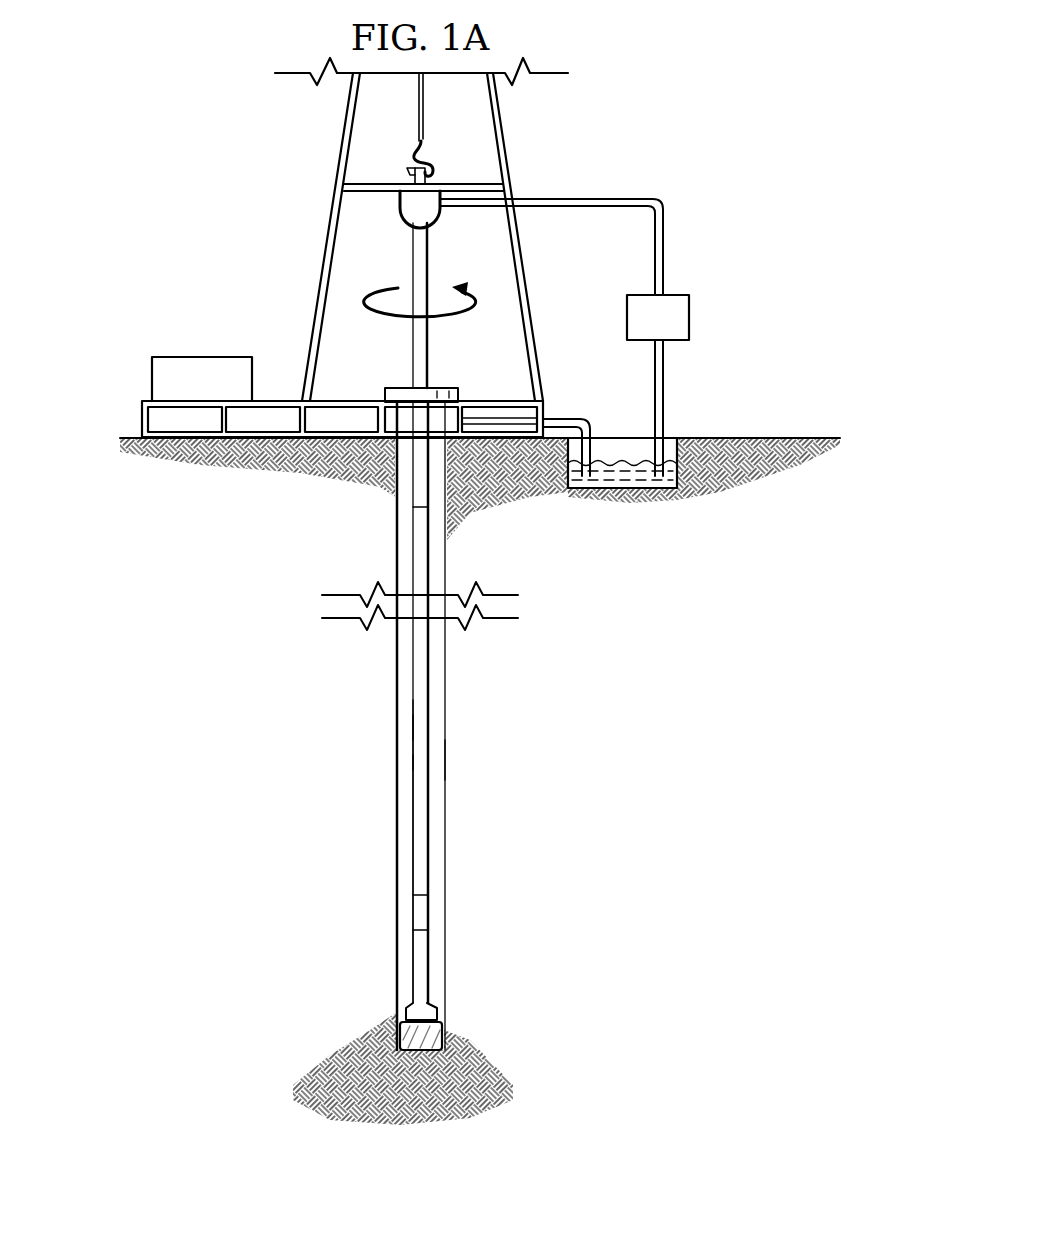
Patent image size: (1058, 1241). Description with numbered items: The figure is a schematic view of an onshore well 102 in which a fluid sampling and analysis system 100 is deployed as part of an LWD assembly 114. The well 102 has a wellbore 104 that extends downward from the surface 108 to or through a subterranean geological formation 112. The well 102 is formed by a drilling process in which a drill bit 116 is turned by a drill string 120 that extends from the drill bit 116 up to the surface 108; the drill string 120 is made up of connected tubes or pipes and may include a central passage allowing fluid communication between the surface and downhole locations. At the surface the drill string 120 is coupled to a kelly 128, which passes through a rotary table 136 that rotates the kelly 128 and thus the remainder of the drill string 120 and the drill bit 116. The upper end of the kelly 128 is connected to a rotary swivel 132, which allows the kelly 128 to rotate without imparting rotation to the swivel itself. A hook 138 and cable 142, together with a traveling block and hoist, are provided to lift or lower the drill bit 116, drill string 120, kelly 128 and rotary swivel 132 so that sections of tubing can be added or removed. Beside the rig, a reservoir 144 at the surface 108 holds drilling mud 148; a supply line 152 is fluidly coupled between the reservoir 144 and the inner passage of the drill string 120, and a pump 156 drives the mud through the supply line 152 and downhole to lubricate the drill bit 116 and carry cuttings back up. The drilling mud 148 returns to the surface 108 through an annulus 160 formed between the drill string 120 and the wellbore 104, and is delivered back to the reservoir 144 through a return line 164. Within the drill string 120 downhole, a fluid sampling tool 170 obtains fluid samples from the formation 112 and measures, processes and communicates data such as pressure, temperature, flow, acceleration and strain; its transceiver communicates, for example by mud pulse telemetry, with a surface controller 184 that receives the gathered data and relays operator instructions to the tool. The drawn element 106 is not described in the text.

The fluid sampling and analysis system 100 is at (257, 212).
The well 102 is at (451, 377).
The wellbore 104 is at (398, 735).
The annulus 106 is at (440, 746).
The surface 108 is at (775, 438).
The subterranean geological formation 112 is at (295, 1088).
The LWD assembly 114 is at (448, 698).
The drill bit 116 is at (444, 1025).
The drill string 120 is at (411, 685).
The kelly 128 is at (413, 498).
The rotary swivel 132 is at (407, 224).
The rotary table 136 is at (395, 387).
The hook 138 is at (435, 166).
The cable 142 is at (413, 128).
The reservoir 144 is at (630, 489).
The drilling mud 148 is at (602, 459).
The supply line 152 is at (610, 198).
The pump 156 is at (689, 317).
The annulus 160 is at (405, 762).
The return line 164 is at (558, 414).
The fluid sampling tool 170 is at (420, 910).
The surface controller 184 is at (203, 355).